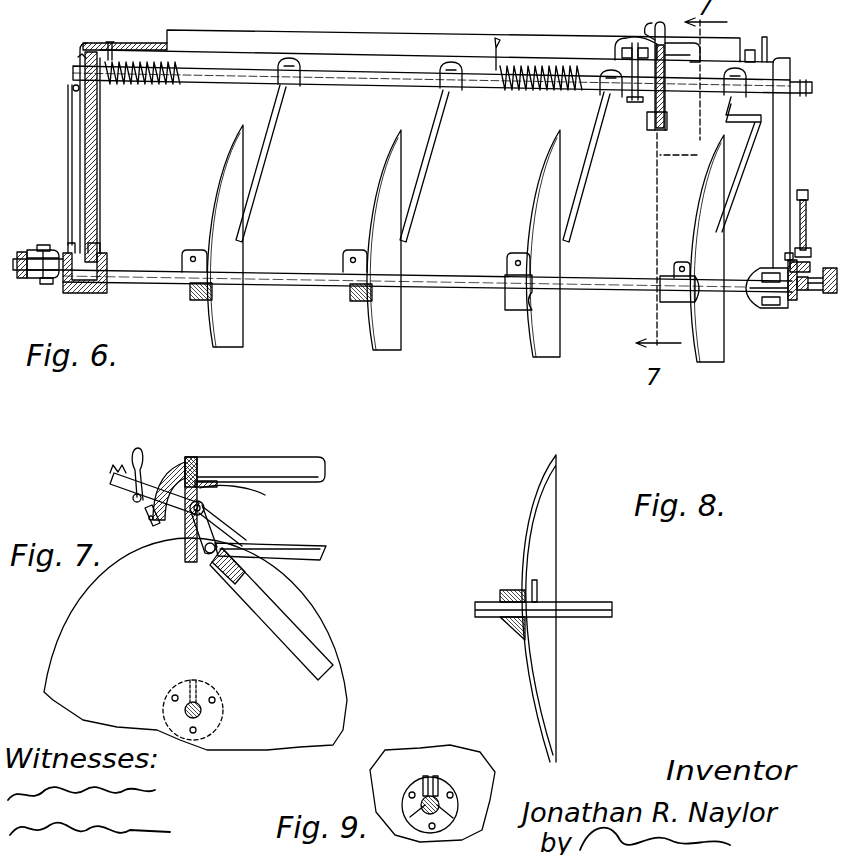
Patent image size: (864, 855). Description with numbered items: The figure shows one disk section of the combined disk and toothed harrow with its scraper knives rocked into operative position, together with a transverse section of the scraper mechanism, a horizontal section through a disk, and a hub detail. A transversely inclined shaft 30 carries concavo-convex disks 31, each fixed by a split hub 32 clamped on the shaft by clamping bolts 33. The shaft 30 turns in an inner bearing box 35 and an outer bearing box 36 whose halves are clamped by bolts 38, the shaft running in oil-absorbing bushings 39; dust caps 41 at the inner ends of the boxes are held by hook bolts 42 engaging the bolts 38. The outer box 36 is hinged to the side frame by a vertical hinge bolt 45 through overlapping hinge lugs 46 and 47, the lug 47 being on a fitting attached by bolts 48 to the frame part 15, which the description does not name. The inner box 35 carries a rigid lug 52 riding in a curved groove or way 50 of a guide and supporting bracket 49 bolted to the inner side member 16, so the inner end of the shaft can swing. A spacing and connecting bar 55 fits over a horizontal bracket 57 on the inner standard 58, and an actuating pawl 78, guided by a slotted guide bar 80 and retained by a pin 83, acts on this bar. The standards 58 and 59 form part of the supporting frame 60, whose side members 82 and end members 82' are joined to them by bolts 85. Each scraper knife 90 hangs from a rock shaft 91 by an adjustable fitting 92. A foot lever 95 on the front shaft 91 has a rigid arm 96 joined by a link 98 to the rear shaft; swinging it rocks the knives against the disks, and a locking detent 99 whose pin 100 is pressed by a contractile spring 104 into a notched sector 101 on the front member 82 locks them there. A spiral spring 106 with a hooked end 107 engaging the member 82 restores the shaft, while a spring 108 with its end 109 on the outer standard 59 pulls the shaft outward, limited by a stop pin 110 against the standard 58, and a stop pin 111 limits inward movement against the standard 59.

In FIG. 6, the bracket plate 15 is at (22, 251).
In FIG. 6, the side member 16 is at (830, 295).
In FIG. 6, the disk supporting shaft 30 is at (462, 283).
In FIG. 7, the disk supporting shaft 30 is at (186, 708).
In FIG. 8, the disk supporting shaft 30 is at (486, 612).
In FIG. 9, the disk supporting shaft 30 is at (426, 796).
In FIG. 6, the disk 31 is at (229, 156).
In FIG. 7, the disk 31 is at (303, 613).
In FIG. 8, the disk 31 is at (536, 503).
In FIG. 9, the disk 31 is at (466, 750).
In FIG. 6, the split hub 32 is at (200, 295).
In FIG. 8, the split hub 32 is at (506, 598).
In FIG. 9, the split hub 32 is at (458, 800).
In FIG. 6, the clamping bolt 33 is at (193, 252).
In FIG. 9, the clamping bolt 33 is at (444, 784).
In FIG. 6, the inner bearing box 35 is at (783, 310).
In FIG. 6, the outer bearing box 36 is at (93, 294).
In FIG. 6, the clamping bolt 38 is at (763, 266).
In FIG. 6, the bearing sleeve or bushing 39 is at (101, 295).
In FIG. 6, the dust guard or cap 41 is at (100, 266).
In FIG. 6, the hook bolt 42 is at (750, 302).
In FIG. 6, the vertical hinge bolt 45 is at (47, 250).
In FIG. 6, the hinge lug 46 is at (48, 285).
In FIG. 6, the hinge lug 47 is at (45, 245).
In FIG. 6, the bolt 48 is at (20, 278).
In FIG. 6, the guide and supporting bracket 49 is at (816, 293).
In FIG. 6, the groove or way 50 is at (814, 296).
In FIG. 6, the lug 52 is at (797, 292).
In FIG. 6, the spacing and connecting bar 55 is at (787, 254).
In FIG. 6, the horizontal bracket 57 is at (808, 262).
In FIG. 6, the inner standard 58 is at (791, 157).
In FIG. 6, the outer standard 59 is at (85, 125).
In FIG. 7, the outer standard 59 is at (185, 544).
In FIG. 6, the supporting frame 60 is at (355, 32).
In FIG. 7, the supporting frame 60 is at (230, 445).
In FIG. 6, the actuating pawl 78 is at (797, 200).
In FIG. 6, the slotted guide bar 80 is at (812, 205).
In FIG. 6, the side member 82 is at (425, 31).
In FIG. 7, the side member 82 is at (216, 450).
In FIG. 7, the end member 82' is at (261, 450).
In FIG. 6, the pin 83 is at (806, 248).
In FIG. 6, the bolt 85 is at (112, 40).
In FIG. 6, the scraper knife 90 is at (258, 153).
In FIG. 7, the scraper knife 90 is at (261, 585).
In FIG. 8, the scraper knife 90 is at (539, 588).
In FIG. 6, the rock shaft 91 is at (362, 80).
In FIG. 7, the rock shaft 91 is at (266, 496).
In FIG. 6, the fitting 92 is at (284, 88).
In FIG. 7, the fitting 92 is at (221, 529).
In FIG. 6, the foot lever 95 is at (677, 43).
In FIG. 7, the foot lever 95 is at (118, 490).
In FIG. 6, the rigid arm 96 is at (667, 118).
In FIG. 7, the rigid arm 96 is at (205, 509).
In FIG. 6, the link 98 is at (656, 130).
In FIG. 7, the link 98 is at (301, 545).
In FIG. 6, the locking detent 99 is at (646, 65).
In FIG. 7, the locking detent 99 is at (141, 466).
In FIG. 6, the pin or lug 100 is at (612, 102).
In FIG. 7, the pin or lug 100 is at (152, 526).
In FIG. 6, the sector 101 is at (627, 70).
In FIG. 7, the sector 101 is at (176, 465).
In FIG. 6, the contractile spiral spring 104 is at (657, 37).
In FIG. 7, the contractile spiral spring 104 is at (125, 472).
In FIG. 6, the spiral spring 106 is at (538, 93).
In FIG. 6, the hook-shaped spring end 107 is at (500, 32).
In FIG. 6, the spiral contractile spring 108 is at (163, 84).
In FIG. 6, the spring end 109 is at (73, 88).
In FIG. 6, the stop pin 110 is at (800, 74).
In FIG. 6, the stop pin 111 is at (78, 57).